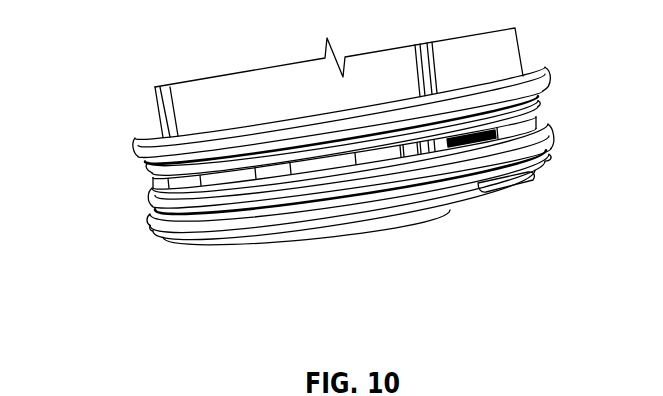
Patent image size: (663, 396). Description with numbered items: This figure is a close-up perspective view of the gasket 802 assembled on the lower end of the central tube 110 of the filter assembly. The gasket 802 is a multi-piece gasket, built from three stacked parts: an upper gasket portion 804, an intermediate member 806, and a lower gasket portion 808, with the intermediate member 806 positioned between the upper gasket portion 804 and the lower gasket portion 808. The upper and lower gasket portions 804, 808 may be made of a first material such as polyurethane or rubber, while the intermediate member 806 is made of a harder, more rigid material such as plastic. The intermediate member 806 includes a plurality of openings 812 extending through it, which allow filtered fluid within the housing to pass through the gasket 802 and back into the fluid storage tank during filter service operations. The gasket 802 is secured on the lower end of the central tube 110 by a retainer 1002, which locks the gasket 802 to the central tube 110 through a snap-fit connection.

The central tube 110 is at (182, 112).
The gasket 802 is at (332, 164).
The upper gasket portion 804 is at (547, 78).
The intermediate member 806 is at (546, 103).
The lower gasket portion 808 is at (553, 155).
The openings 812 is at (217, 179).
The retainer 1002 is at (510, 192).